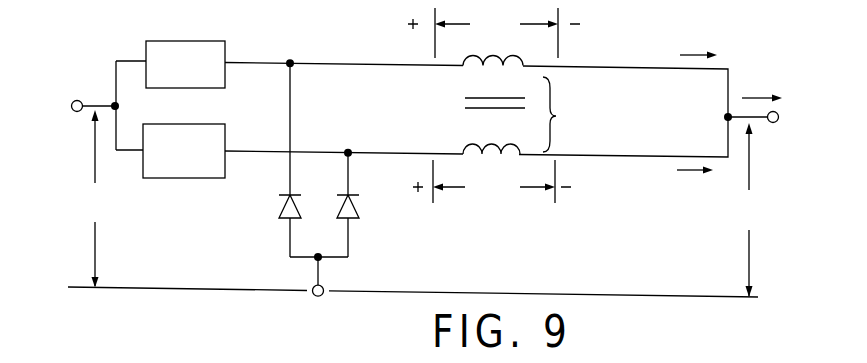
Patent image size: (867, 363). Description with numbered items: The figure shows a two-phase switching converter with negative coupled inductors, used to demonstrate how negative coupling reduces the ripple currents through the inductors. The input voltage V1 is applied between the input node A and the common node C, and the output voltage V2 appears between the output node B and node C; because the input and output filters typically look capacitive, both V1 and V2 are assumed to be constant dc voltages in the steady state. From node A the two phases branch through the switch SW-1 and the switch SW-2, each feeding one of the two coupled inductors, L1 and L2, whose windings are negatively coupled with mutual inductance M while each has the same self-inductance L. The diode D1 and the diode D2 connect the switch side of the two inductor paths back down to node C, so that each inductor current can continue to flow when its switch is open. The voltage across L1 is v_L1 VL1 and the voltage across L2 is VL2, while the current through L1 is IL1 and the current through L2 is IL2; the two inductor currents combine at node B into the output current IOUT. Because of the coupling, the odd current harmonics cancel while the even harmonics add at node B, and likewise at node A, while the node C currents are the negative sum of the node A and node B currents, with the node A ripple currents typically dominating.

The node A is at (94, 117).
The node B is at (751, 129).
The node C is at (318, 288).
The switch SW-1 is at (185, 64).
The switch SW-2 is at (184, 151).
The diode D1 is at (279, 204).
The diode D2 is at (357, 206).
The inductor L1 is at (483, 72).
The inductor L2 is at (485, 141).
The mutual inductance M is at (519, 114).
The voltage across L1 VL1 is at (494, 33).
The voltage across L2 VL2 is at (492, 181).
The current through L1 IL1 is at (679, 54).
The current through L2 IL2 is at (674, 171).
The output current IOUT is at (762, 85).
The input voltage V1 is at (88, 199).
The output voltage V2 is at (743, 210).